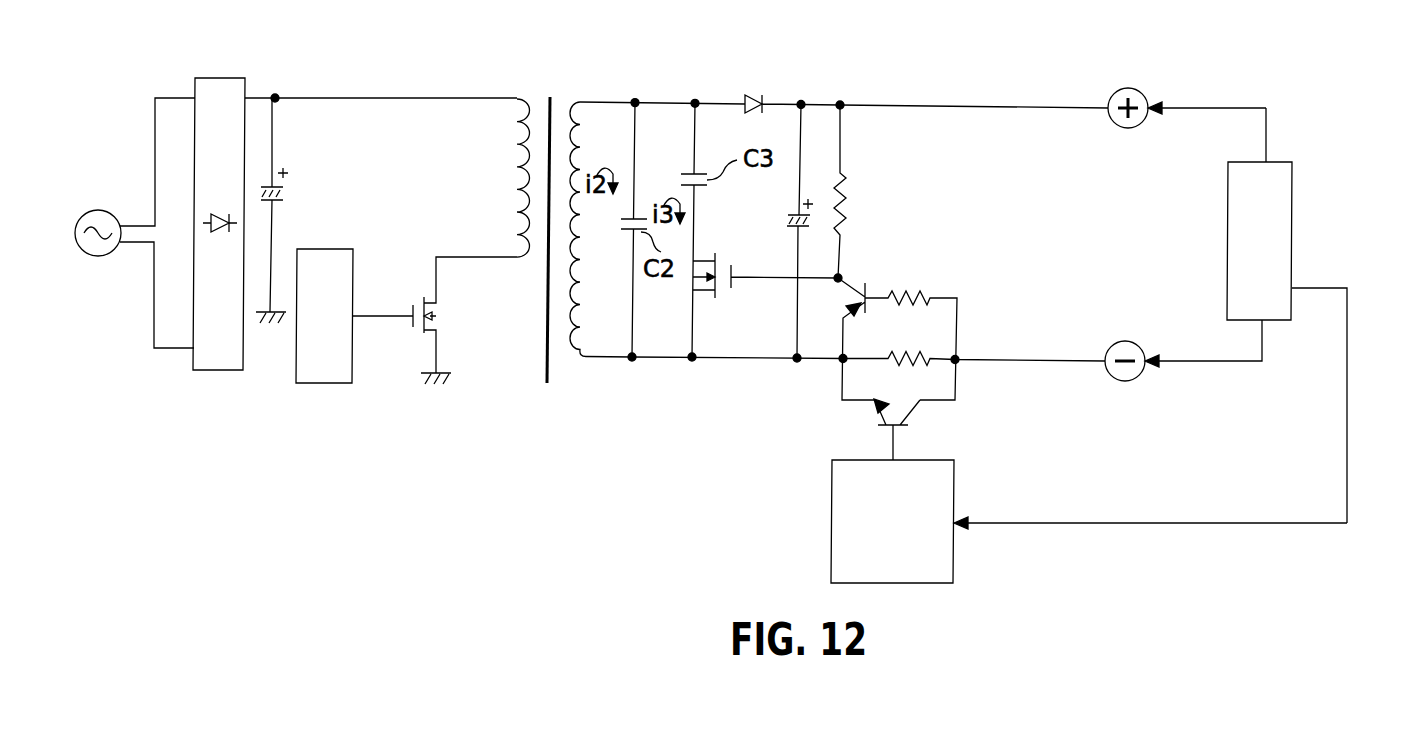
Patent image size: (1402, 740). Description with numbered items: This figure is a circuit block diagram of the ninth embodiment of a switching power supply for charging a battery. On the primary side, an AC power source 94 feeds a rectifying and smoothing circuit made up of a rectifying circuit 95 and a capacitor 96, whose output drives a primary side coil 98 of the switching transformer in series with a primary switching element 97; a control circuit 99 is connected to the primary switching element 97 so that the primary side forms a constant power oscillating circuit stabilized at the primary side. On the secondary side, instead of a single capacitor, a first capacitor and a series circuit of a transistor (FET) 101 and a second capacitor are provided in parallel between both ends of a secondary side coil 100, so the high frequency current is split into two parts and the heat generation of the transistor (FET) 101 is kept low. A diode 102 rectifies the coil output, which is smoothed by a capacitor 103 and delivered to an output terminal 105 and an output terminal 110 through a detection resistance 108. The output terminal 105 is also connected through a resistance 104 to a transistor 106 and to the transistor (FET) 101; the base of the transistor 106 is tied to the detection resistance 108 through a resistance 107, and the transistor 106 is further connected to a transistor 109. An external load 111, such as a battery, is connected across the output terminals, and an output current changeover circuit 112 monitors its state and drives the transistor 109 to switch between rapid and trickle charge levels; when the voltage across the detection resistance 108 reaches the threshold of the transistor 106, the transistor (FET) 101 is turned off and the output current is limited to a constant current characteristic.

The AC power source 94 is at (92, 257).
The rectifying circuit 95 is at (232, 78).
The capacitor 96 is at (284, 197).
The primary switching element 97 is at (436, 316).
The primary side coil 98 is at (521, 99).
The control circuit 99 is at (322, 249).
The secondary side coil 100 is at (580, 102).
The transistor (FET) 101 is at (717, 292).
The diode 102 is at (757, 95).
The capacitor 103 is at (788, 218).
The resistance 104 is at (846, 206).
The output terminal 105 is at (1130, 88).
The transistor 106 is at (850, 281).
The resistance 107 is at (925, 293).
The detection resistance 108 is at (925, 351).
The transistor 109 is at (925, 416).
The output terminal 110 is at (1125, 381).
The external load 111 is at (1292, 203).
The output current changeover circuit 112 is at (953, 560).